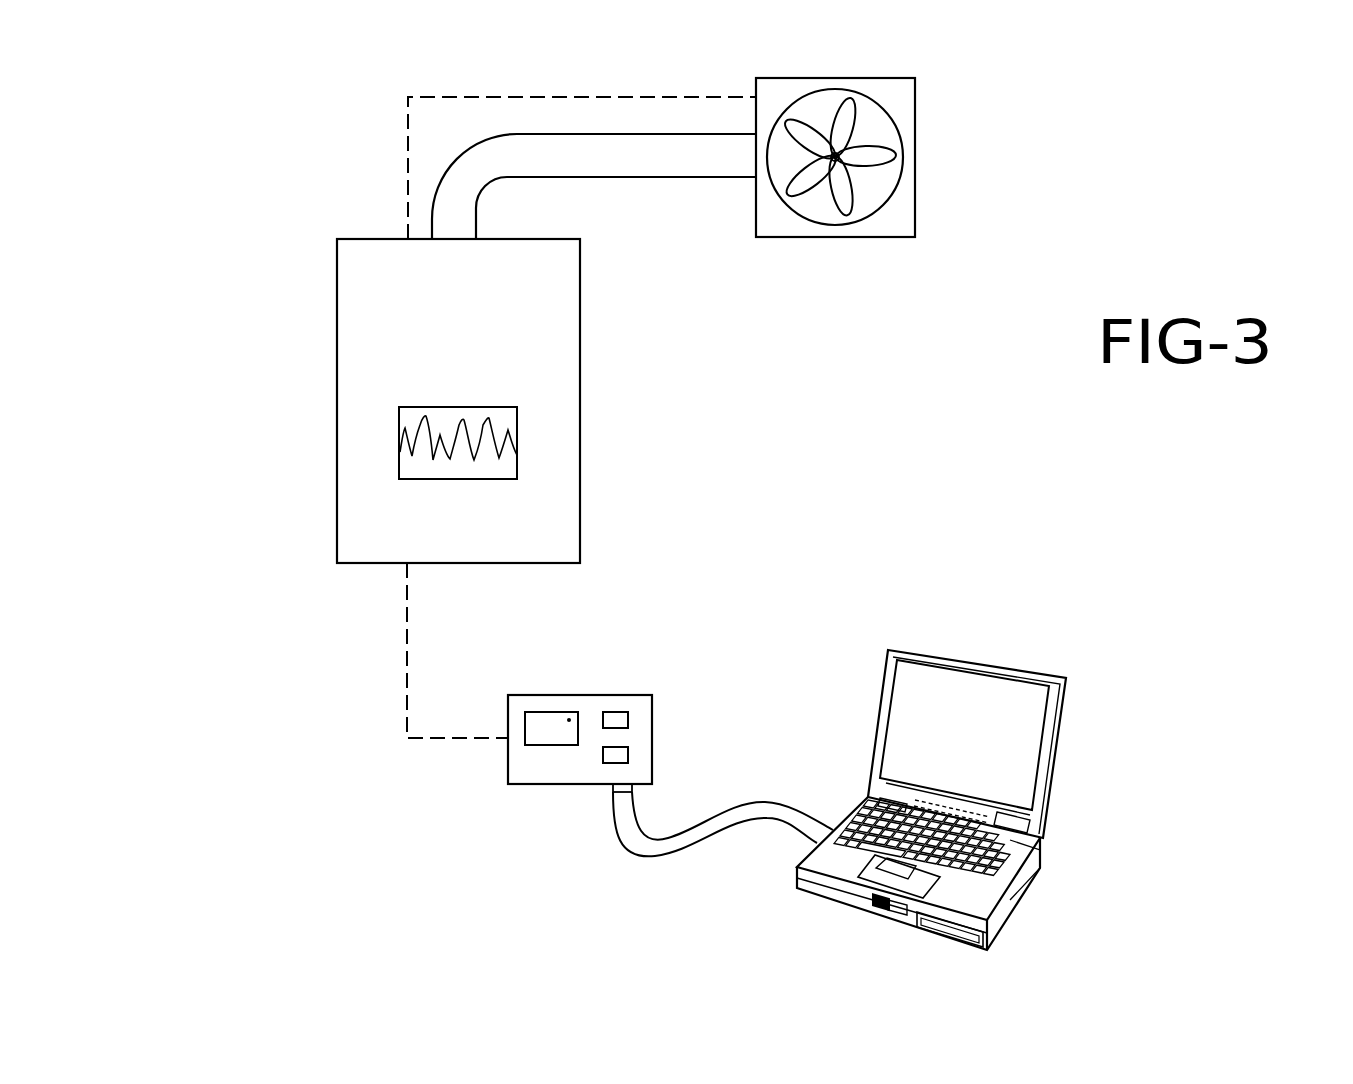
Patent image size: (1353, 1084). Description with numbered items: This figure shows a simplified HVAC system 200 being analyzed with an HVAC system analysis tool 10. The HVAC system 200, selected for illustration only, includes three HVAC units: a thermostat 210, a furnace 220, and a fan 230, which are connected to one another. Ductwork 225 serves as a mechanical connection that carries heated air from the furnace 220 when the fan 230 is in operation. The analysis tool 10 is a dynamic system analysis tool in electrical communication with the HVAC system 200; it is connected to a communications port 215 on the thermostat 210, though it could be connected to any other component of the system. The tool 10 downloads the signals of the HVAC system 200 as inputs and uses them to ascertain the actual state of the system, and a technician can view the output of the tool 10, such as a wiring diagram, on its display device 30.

The HVAC system 200 is at (190, 200).
The HVAC system analysis tool 10 is at (1022, 658).
The display device 30 is at (1018, 738).
The thermostat 210 is at (562, 695).
The communications port 215 is at (610, 788).
The furnace 220 is at (580, 427).
The ductwork 225 is at (643, 178).
The fan 230 is at (915, 160).